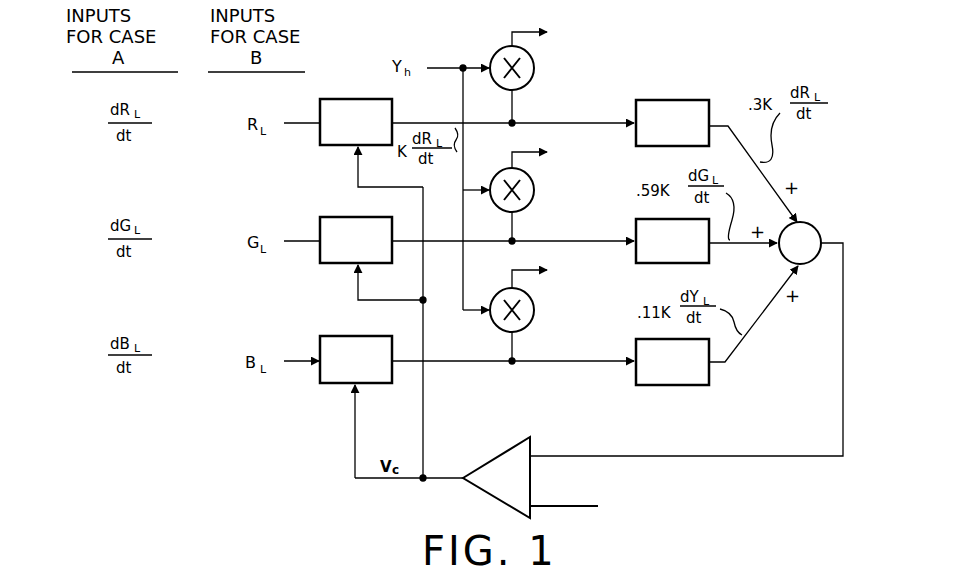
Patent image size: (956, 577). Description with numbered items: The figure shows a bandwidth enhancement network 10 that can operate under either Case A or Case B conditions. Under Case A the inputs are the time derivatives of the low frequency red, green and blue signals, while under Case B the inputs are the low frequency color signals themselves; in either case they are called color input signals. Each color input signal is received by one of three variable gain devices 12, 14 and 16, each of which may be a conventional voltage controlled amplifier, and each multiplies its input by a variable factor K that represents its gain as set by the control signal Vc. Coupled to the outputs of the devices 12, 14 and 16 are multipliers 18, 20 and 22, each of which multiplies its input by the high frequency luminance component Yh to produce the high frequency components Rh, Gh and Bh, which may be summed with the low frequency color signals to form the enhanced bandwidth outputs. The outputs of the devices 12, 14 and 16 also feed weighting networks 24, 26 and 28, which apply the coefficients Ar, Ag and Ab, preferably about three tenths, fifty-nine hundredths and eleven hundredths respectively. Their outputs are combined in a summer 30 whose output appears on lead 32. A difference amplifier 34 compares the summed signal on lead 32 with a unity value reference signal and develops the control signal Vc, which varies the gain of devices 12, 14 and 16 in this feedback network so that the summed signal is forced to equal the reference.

The bandwidth enhancement network 10 is at (660, 82).
The variable gain device 12 is at (372, 99).
The variable gain device 14 is at (342, 217).
The variable gain device 16 is at (340, 336).
The multiplier 18 is at (533, 80).
The multiplier 20 is at (533, 202).
The multiplier 22 is at (533, 322).
The weighting network 24 is at (648, 146).
The weighting network 26 is at (650, 263).
The weighting network 28 is at (660, 385).
The summer 30 is at (818, 230).
The lead 32 is at (843, 403).
The difference amplifier 34 is at (492, 495).